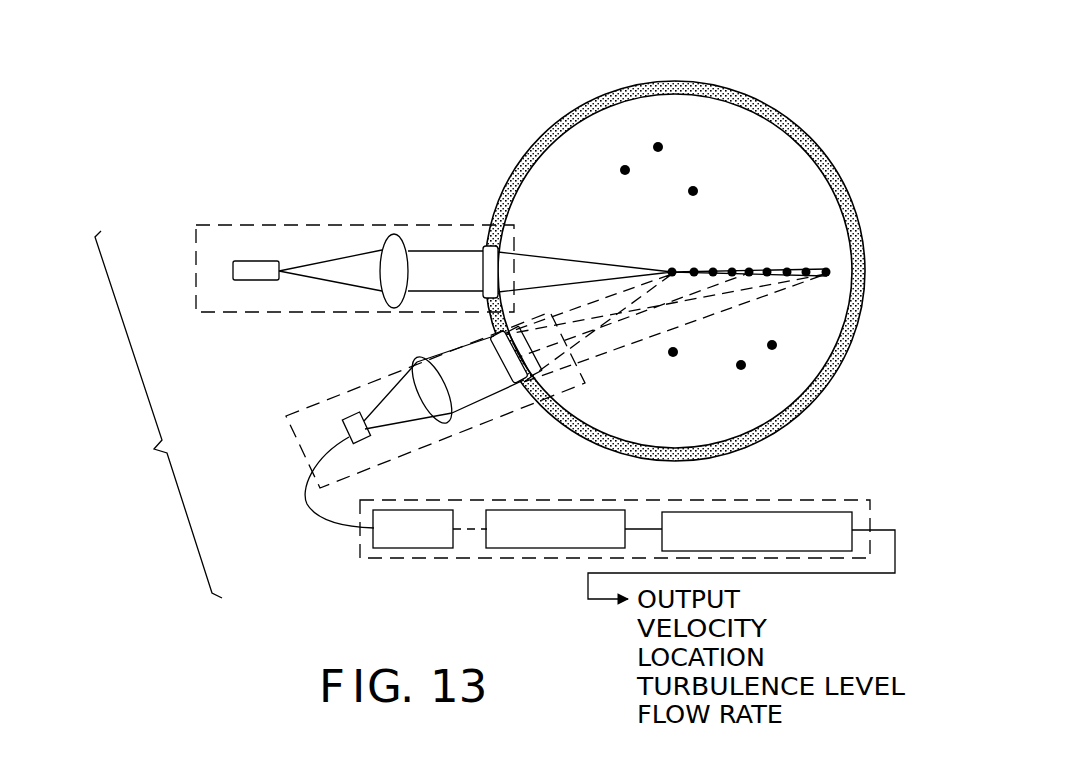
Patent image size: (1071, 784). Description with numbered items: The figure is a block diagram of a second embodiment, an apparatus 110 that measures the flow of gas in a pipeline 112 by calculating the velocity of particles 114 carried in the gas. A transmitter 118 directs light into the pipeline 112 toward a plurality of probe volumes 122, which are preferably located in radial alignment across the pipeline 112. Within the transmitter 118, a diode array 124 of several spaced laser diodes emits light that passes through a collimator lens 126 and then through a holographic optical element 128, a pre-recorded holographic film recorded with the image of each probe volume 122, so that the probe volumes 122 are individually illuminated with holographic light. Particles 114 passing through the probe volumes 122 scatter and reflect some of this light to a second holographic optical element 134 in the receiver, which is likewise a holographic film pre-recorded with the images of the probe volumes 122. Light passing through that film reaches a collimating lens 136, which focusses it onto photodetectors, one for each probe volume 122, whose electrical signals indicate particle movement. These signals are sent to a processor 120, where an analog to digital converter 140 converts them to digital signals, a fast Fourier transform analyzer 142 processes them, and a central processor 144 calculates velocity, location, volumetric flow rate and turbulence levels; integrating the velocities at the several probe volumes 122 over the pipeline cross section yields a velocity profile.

The apparatus 110 is at (158, 414).
The pipeline 112 is at (541, 138).
The particles 114 is at (657, 147).
The transmitter 118 is at (320, 214).
The processor 120 is at (380, 558).
The probe volumes 122 is at (694, 270).
The diode array 124 is at (256, 260).
The collimator lens 126 is at (393, 235).
The holographic optical element 128 is at (473, 244).
The second holographic optical element 134 is at (518, 382).
The collimating lens 136 is at (450, 422).
The analog to digital converter 140 is at (341, 418).
The fast Fourier transform analyzer 142 is at (525, 549).
The central processor 144 is at (830, 514).